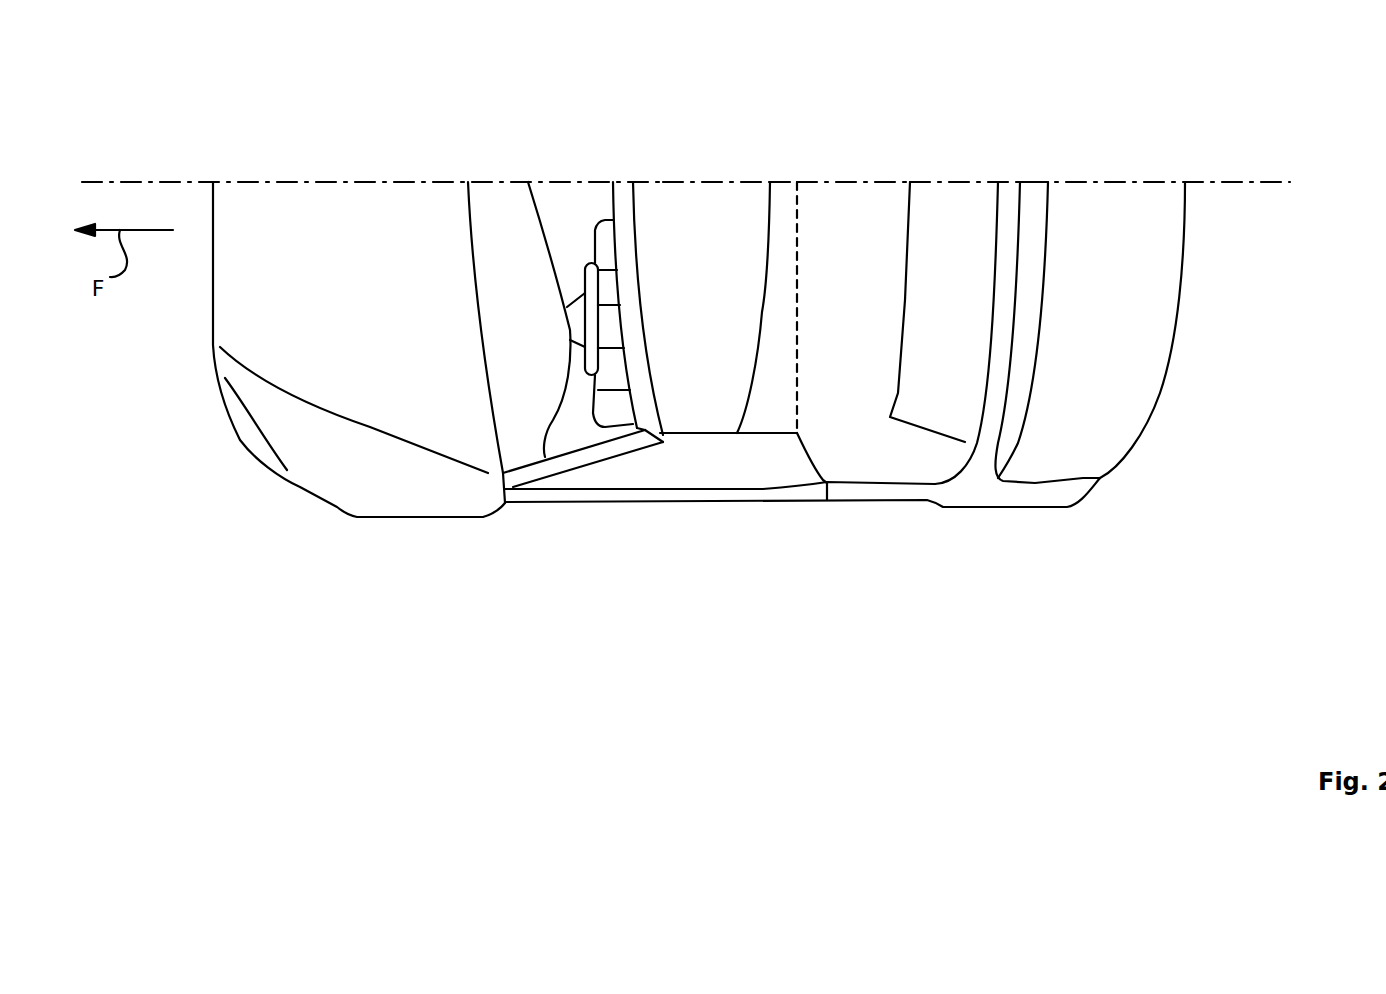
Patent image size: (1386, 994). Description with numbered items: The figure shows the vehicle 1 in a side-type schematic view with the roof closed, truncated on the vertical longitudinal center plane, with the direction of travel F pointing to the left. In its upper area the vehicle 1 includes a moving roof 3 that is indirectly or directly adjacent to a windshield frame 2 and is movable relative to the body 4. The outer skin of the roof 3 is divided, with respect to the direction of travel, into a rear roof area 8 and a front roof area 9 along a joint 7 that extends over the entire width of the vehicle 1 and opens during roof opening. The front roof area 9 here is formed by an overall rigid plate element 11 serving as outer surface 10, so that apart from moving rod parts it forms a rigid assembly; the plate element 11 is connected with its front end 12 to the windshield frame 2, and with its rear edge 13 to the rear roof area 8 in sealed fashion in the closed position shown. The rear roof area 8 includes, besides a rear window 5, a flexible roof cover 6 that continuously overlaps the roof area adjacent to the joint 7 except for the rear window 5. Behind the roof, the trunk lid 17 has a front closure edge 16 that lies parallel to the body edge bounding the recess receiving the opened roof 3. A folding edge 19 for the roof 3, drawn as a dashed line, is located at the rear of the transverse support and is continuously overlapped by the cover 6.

The vehicle 1 is at (1012, 140).
The windshield frame 2 is at (642, 403).
The moving roof 3 is at (843, 462).
The body 4 is at (917, 490).
The rear window 5 is at (961, 311).
The flexible roof cover 6 is at (875, 210).
The joint 7 is at (770, 215).
The rear roof area 8 is at (820, 305).
The front roof area 9 is at (692, 305).
The outer surface 10 is at (723, 210).
The plate element 11 is at (693, 418).
The front end 12 is at (647, 265).
The rear edge 13 is at (755, 312).
The front closure edge 16 is at (1048, 238).
The trunk lid 17 is at (1125, 326).
The folding edge 19 is at (797, 218).